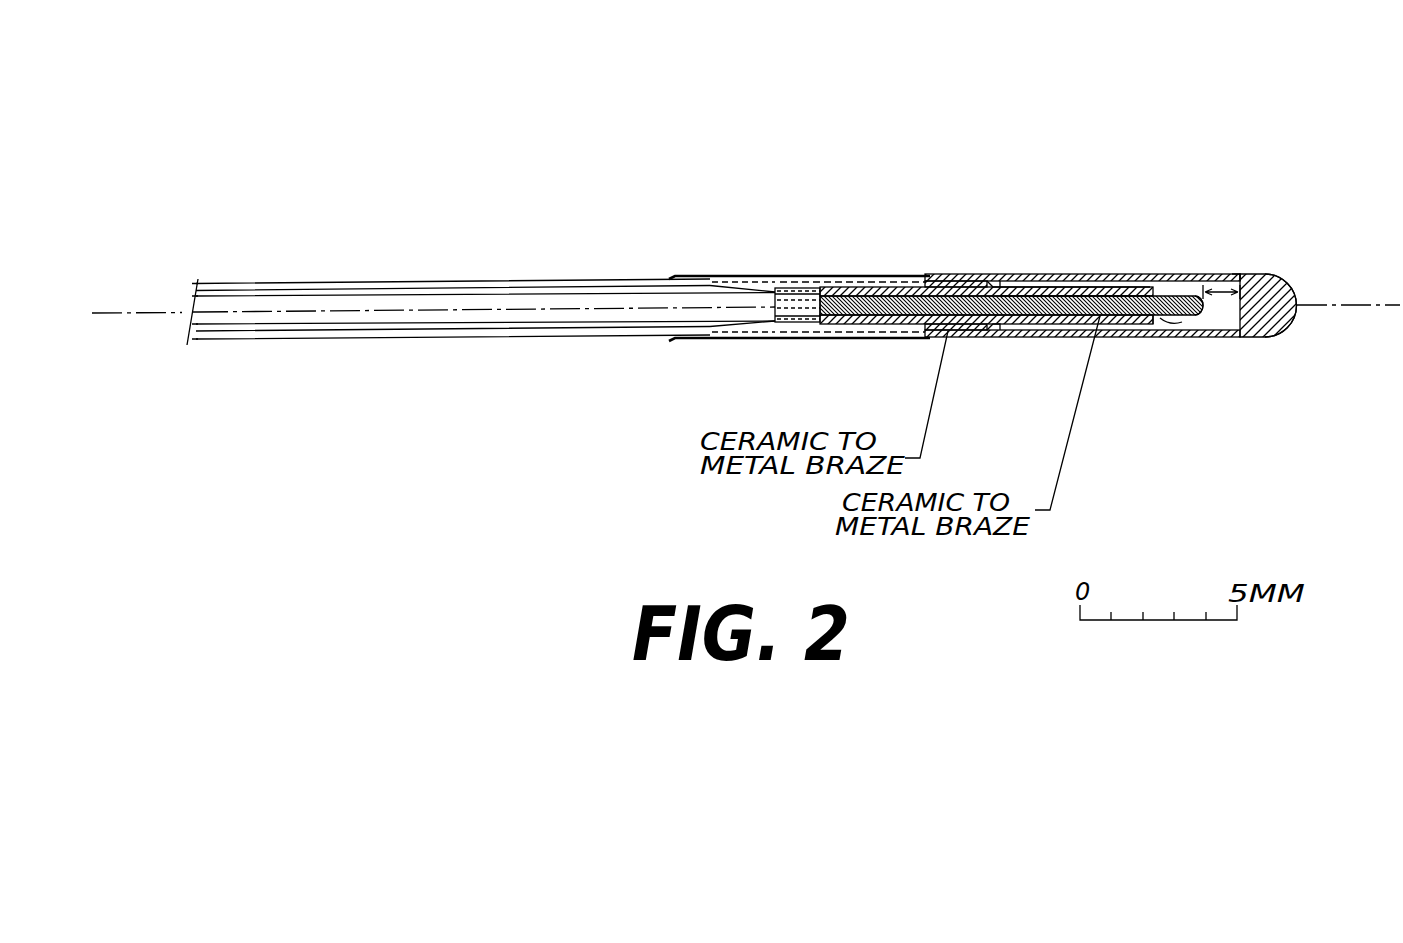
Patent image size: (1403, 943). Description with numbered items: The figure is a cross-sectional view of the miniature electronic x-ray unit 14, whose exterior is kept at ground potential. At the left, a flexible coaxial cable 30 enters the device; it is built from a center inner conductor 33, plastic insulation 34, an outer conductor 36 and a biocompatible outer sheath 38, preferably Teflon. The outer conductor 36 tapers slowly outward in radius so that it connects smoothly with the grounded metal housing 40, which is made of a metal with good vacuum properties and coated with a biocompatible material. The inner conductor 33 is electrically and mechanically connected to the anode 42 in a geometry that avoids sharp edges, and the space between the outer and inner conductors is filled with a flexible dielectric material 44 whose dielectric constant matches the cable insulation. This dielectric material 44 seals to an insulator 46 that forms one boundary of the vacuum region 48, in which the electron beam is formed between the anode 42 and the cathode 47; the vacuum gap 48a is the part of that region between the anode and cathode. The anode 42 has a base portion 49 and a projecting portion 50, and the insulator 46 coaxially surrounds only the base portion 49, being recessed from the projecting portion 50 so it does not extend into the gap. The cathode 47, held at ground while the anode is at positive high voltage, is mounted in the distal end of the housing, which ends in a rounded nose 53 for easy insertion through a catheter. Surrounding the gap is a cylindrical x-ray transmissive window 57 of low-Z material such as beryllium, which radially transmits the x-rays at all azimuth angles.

The x-ray unit 14 is at (1200, 45).
The flexible coaxial cable 30 is at (585, 296).
The inner conductor 33 is at (800, 318).
The plastic insulation 34 is at (610, 303).
The outer conductor 36 is at (768, 293).
The outer sheath 38 is at (220, 284).
The metal housing 40 is at (1040, 275).
The anode 42 is at (1192, 295).
The dielectric material 44 is at (753, 338).
The insulator 46 is at (962, 275).
The cathode 47 is at (1240, 330).
The vacuum region 48 is at (1170, 325).
The vacuum gap 48a is at (1232, 274).
The base portion 49 is at (1040, 293).
The projecting portion 50 is at (1168, 297).
The rounded nose 53 is at (1282, 335).
The x-ray transmissive window 57 is at (995, 275).